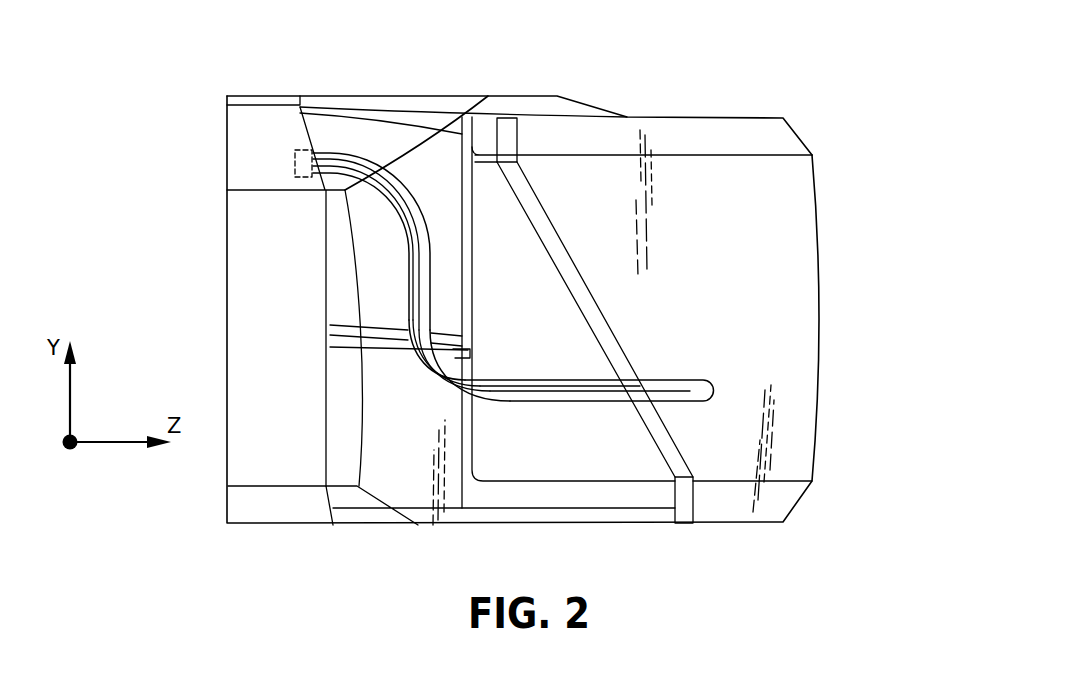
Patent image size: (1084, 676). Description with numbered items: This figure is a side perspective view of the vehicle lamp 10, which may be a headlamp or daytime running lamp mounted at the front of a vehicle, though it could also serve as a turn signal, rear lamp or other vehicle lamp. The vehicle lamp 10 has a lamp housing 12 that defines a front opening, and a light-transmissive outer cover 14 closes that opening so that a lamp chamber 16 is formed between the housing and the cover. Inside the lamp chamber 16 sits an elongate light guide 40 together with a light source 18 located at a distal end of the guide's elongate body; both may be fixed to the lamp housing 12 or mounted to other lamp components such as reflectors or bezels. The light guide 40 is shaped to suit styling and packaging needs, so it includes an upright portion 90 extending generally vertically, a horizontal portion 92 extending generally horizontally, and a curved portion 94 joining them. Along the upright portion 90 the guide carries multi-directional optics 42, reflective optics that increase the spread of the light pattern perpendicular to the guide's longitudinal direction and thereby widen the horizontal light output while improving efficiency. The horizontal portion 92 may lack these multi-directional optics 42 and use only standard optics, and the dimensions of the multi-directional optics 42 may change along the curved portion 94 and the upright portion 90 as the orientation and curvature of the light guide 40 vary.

The vehicle lamp 10 is at (672, 78).
The lamp housing 12 is at (270, 255).
The light-transmissive outer cover 14 is at (803, 227).
The lamp chamber 16 is at (565, 175).
The light source 18 is at (297, 163).
The light guide 40 is at (683, 398).
The multi-directional optics 42 is at (413, 318).
The upright portion 90 is at (408, 248).
The horizontal portion 92 is at (612, 401).
The curved portion 94 is at (463, 398).